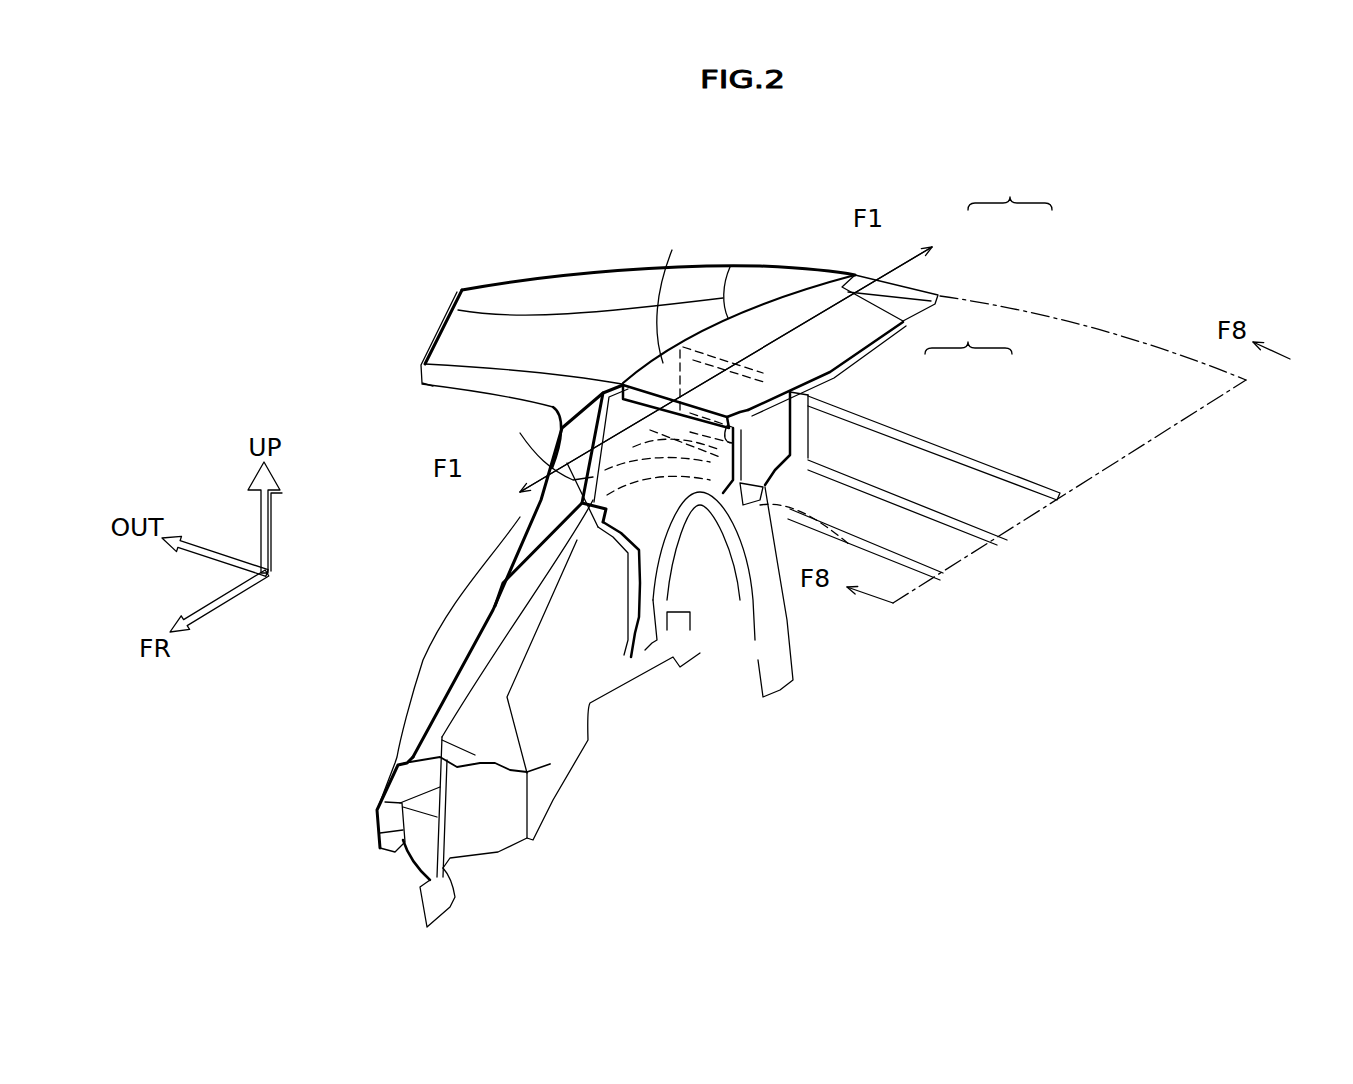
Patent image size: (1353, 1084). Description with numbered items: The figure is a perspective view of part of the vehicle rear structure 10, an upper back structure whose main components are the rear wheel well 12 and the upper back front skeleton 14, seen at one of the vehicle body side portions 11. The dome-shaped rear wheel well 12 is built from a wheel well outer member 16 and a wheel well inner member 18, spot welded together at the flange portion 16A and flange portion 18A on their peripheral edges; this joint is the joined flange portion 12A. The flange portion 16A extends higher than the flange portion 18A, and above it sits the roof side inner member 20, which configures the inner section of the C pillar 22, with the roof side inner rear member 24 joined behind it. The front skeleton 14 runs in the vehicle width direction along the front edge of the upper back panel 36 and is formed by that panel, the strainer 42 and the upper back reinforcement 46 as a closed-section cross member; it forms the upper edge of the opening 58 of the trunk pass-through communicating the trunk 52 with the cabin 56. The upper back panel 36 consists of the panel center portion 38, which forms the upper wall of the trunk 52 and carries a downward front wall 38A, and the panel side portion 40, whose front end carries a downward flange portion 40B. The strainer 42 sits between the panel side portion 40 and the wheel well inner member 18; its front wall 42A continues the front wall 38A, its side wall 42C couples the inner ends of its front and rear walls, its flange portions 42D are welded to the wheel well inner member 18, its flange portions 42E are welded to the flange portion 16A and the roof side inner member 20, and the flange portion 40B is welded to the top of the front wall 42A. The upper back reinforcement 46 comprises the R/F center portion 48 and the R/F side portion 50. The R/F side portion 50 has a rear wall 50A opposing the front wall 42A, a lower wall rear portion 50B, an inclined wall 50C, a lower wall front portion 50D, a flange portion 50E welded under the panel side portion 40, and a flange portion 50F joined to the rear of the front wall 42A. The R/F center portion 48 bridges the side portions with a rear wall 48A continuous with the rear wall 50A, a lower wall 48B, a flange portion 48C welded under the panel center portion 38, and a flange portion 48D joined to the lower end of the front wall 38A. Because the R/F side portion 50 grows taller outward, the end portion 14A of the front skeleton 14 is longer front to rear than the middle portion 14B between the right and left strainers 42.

The vehicle rear structure 10 is at (1158, 212).
The vehicle body side portion 11 is at (622, 244).
The rear wheel well 12 is at (390, 692).
The joined flange portion 12A is at (450, 673).
The upper back front skeleton 14 is at (1070, 468).
The vehicle width direction end portion 14A is at (671, 250).
The vehicle width direction middle portion 14B is at (1003, 495).
The wheel well outer member 16 is at (450, 610).
The flange portion 16A is at (527, 520).
The wheel well inner member 18 is at (630, 684).
The flange portion 18A is at (517, 590).
The roof side inner member 20 is at (533, 282).
The C pillar 22 is at (590, 259).
The roof side inner rear member 24 is at (815, 268).
The upper back panel 36 is at (1044, 273).
The upper back panel center portion 38 is at (1045, 312).
The front wall 38A is at (983, 540).
The upper back panel side portion 40 is at (918, 287).
The flange portion 40B is at (745, 444).
The strainer 42 is at (692, 549).
The front wall 42A is at (600, 527).
The side wall 42C is at (680, 590).
The flange portions 42D is at (624, 573).
The flange portions 42E is at (567, 463).
The upper back reinforcement 46 is at (832, 404).
The upper back reinforcement center portion 48 is at (985, 467).
The rear wall 48A is at (1047, 513).
The lower wall 48B is at (987, 577).
The flange portion 48C is at (1063, 487).
The flange portion 48D is at (910, 573).
The upper back reinforcement side portion 50 is at (813, 388).
The rear wall 50A is at (677, 430).
The lower wall rear portion 50B is at (660, 420).
The inclined wall 50C is at (623, 413).
The lower wall front portion 50D is at (583, 413).
The flange portion 50E is at (680, 430).
The flange portion 50F is at (800, 507).
The trunk 52 is at (1235, 480).
The cabin 56 is at (585, 837).
The opening 58 is at (853, 680).